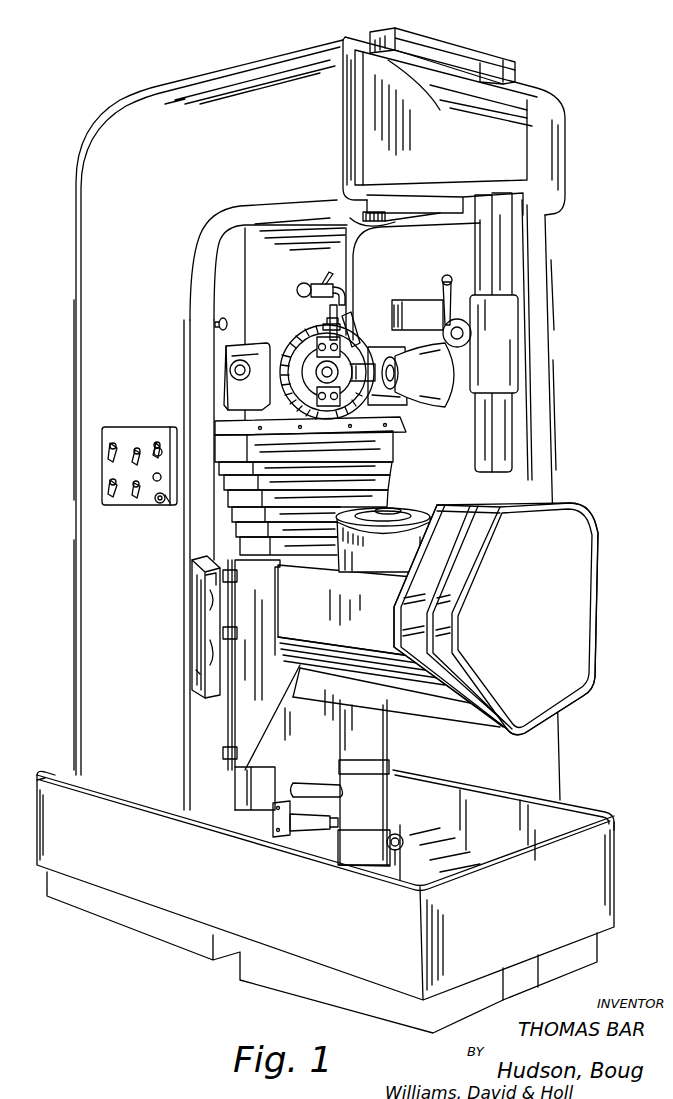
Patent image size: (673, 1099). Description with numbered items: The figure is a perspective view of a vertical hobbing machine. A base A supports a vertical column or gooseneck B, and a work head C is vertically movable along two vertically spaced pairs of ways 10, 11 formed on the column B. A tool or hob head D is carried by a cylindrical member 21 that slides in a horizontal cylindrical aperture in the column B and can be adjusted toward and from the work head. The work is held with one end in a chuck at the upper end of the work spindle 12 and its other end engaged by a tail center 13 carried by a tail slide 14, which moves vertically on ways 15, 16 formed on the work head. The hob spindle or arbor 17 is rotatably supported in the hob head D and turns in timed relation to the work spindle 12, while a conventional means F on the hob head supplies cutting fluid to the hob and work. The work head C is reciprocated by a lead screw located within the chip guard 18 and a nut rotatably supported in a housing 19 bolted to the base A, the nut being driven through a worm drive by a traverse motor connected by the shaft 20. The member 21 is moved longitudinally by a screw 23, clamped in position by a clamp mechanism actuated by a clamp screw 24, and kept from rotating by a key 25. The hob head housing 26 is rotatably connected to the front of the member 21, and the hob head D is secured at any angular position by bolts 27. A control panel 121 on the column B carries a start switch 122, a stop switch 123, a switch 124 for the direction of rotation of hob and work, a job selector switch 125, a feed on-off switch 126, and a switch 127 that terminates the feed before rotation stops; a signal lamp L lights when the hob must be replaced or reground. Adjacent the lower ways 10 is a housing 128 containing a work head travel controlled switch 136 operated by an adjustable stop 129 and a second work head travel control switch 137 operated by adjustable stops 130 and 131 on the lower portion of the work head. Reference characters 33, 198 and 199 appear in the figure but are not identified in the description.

The ways 10 is at (232, 795).
The ways 11 is at (497, 62).
The work spindle 12 is at (416, 511).
The tail center 13 is at (405, 331).
The tail slide 14 is at (507, 310).
The ways 15 is at (500, 418).
The ways 16 is at (480, 438).
The hob spindle or arbor 17 is at (384, 352).
The chip guard 18 is at (383, 775).
The housing 19 is at (357, 862).
The shaft 20 is at (320, 843).
The cylindrical member 21 is at (322, 330).
The screw 23 is at (236, 393).
The clamp screw 24 is at (218, 324).
The key 25 is at (310, 426).
The hob head housing 26 is at (410, 405).
The bolts 27 is at (398, 435).
The chuck 33 is at (360, 407).
The control panel 121 is at (113, 440).
The start switch 122 is at (158, 440).
The stop switch 123 is at (155, 480).
The switch for controlling direction of rotation 124 is at (107, 448).
The job selector switch 125 is at (107, 487).
The feed on-off switch 126 is at (137, 445).
The switch for automatically terminating the feed 127 is at (133, 498).
The housing 128 is at (205, 650).
The adjustable stop 129 is at (238, 577).
The adjustable stop 130 is at (238, 634).
The adjustable stop 131 is at (236, 751).
The work head travel controlled switch 136 is at (190, 673).
The second work head travel control switch 137 is at (190, 615).
The button 198 is at (159, 448).
The indicator light 199 is at (165, 502).
The base A is at (100, 905).
The vertical column or gooseneck B is at (95, 576).
The work head C is at (609, 593).
The tool or hob head D is at (298, 338).
The means for supplying cutting fluid F is at (346, 325).
The signal lamp L is at (160, 503).